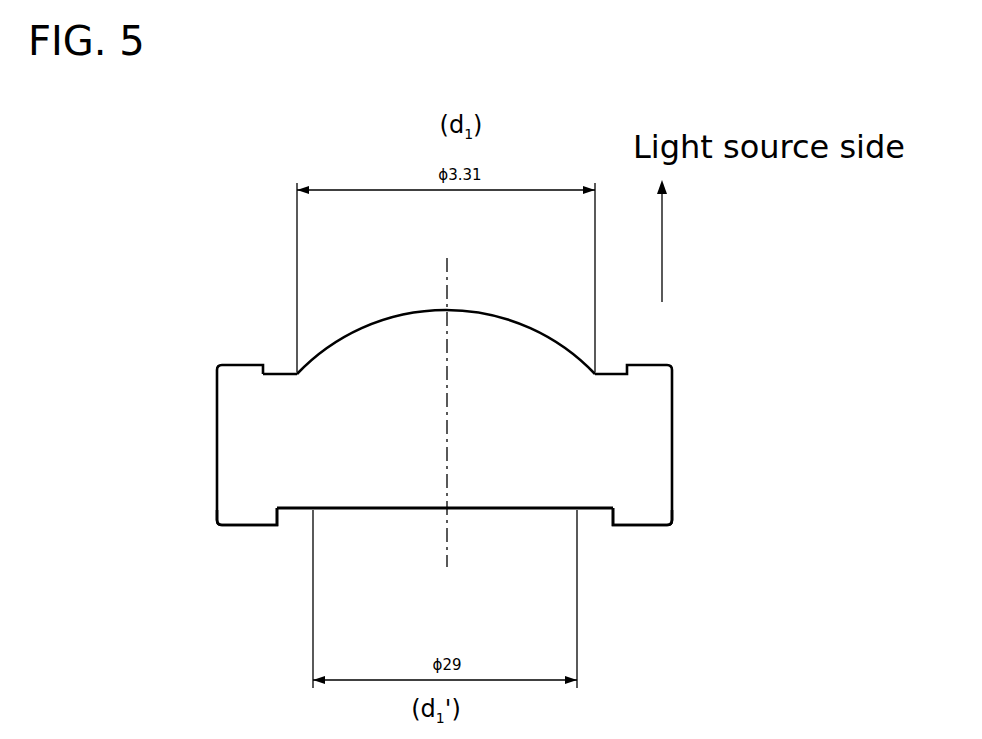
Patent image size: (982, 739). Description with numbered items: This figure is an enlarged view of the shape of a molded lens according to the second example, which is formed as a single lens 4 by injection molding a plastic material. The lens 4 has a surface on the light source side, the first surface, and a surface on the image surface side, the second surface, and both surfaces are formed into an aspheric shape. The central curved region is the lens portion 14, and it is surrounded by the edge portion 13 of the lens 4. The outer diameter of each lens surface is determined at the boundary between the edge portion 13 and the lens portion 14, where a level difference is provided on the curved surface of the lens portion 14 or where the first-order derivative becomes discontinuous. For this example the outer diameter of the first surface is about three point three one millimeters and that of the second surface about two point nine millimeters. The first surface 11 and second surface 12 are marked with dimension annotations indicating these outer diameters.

The lens 4 is at (489, 417).
The convex lens surface 11 is at (477, 311).
The flat lens surface 12 is at (480, 509).
The edge portion 13 is at (253, 500).
The lens portion 14 is at (444, 291).